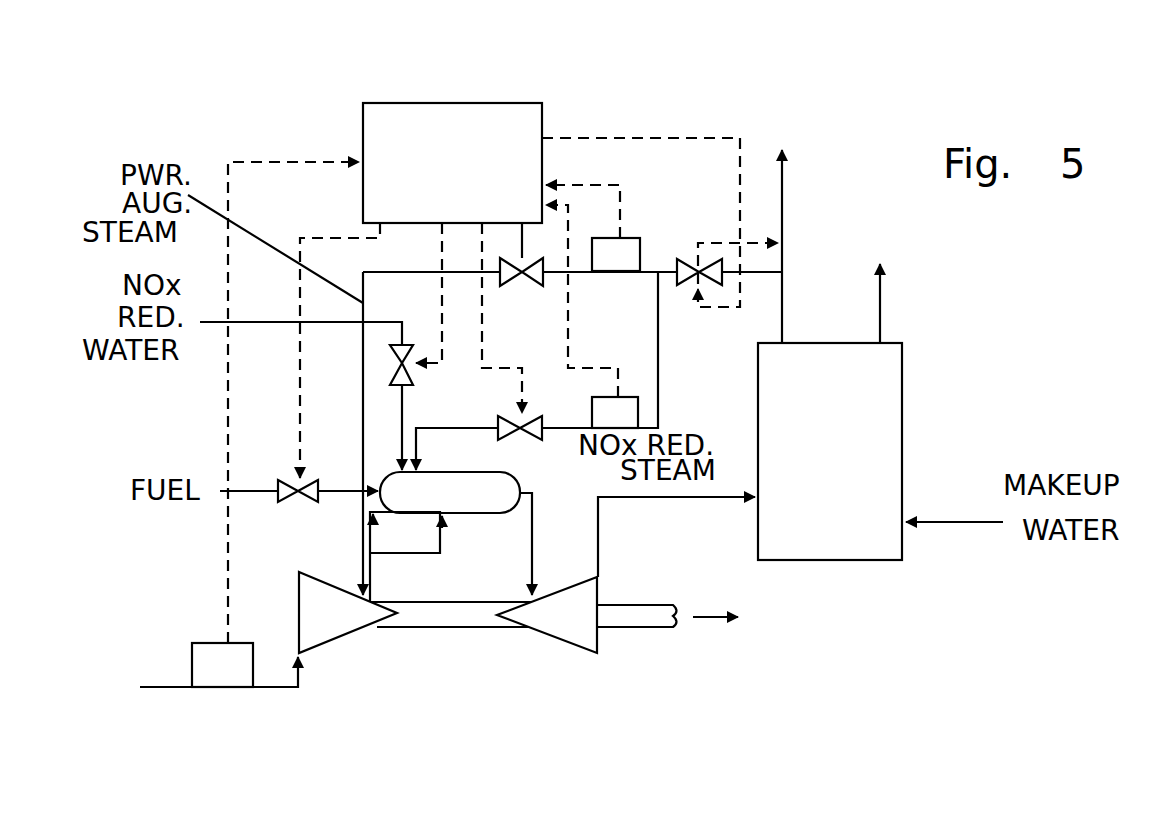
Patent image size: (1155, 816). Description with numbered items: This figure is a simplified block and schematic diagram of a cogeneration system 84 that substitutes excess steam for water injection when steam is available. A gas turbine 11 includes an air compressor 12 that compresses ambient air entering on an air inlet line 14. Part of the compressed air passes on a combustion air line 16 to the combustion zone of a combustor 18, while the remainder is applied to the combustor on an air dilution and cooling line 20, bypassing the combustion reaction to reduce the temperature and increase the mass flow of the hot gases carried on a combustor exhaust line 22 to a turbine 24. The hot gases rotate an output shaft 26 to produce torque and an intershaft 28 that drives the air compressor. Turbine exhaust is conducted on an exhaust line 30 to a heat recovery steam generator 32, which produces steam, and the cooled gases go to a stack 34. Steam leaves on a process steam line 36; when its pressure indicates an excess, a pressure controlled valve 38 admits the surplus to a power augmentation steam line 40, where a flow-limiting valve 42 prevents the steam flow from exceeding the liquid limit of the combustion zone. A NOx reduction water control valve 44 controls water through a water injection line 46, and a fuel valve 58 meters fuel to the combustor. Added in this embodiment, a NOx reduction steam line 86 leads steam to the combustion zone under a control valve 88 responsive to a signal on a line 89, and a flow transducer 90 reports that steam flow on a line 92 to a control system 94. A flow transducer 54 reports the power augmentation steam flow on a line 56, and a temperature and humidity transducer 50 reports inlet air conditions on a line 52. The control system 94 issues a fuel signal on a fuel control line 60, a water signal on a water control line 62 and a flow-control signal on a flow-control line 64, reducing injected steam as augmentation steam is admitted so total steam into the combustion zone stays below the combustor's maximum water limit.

The cogeneration system 84 is at (156, 119).
The control system 94 is at (453, 103).
The fuel control line 60 is at (317, 237).
The water control line 62 is at (440, 315).
The flow-control line 64 is at (524, 258).
The line 56 is at (622, 205).
The pressure controlled valve 38 is at (680, 259).
The process steam line 36 is at (782, 182).
The stack 34 is at (880, 302).
The heat recovery steam generator 32 is at (902, 402).
The flow-limiting valve 42 is at (535, 277).
The line 89 is at (483, 352).
The control valve 88 is at (537, 415).
The flow transducer 54 is at (636, 271).
The line 92 is at (578, 367).
The flow transducer 90 is at (640, 417).
The power augmentation steam line 40 is at (360, 427).
The NOx reduction water control valve 44 is at (410, 383).
The water injection line 46 is at (416, 445).
The NOx reduction steam line 86 is at (470, 428).
The fuel valve 58 is at (285, 487).
The combustor 18 is at (520, 482).
The gas turbine 11 is at (542, 532).
The combustor exhaust line 22 is at (533, 568).
The output shaft 26 is at (620, 600).
The exhaust line 30 is at (700, 500).
The combustion air line 16 is at (392, 532).
The line 52 is at (223, 567).
The temperature and humidity transducer 50 is at (200, 642).
The air compressor 12 is at (322, 640).
The air dilution and cooling line 20 is at (405, 555).
The intershaft 28 is at (482, 630).
The turbine 24 is at (597, 647).
The air inlet line 14 is at (290, 688).